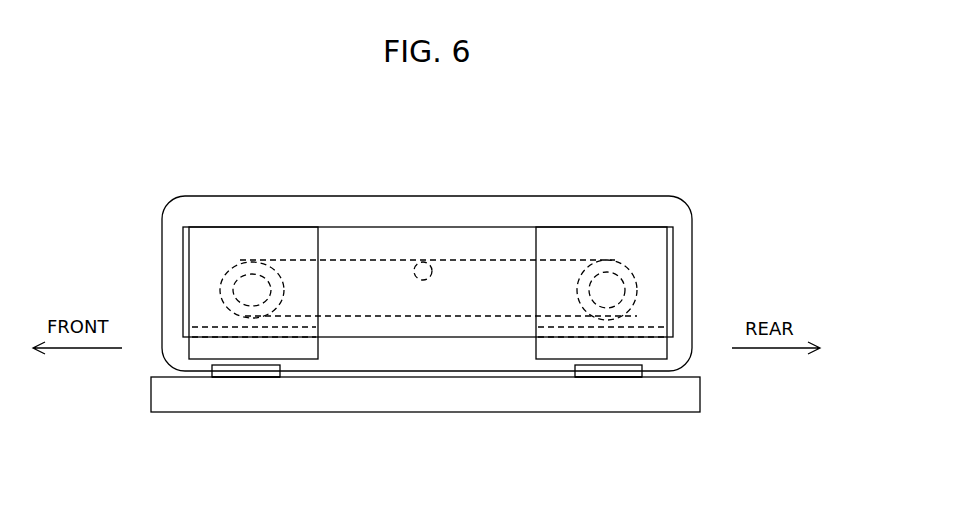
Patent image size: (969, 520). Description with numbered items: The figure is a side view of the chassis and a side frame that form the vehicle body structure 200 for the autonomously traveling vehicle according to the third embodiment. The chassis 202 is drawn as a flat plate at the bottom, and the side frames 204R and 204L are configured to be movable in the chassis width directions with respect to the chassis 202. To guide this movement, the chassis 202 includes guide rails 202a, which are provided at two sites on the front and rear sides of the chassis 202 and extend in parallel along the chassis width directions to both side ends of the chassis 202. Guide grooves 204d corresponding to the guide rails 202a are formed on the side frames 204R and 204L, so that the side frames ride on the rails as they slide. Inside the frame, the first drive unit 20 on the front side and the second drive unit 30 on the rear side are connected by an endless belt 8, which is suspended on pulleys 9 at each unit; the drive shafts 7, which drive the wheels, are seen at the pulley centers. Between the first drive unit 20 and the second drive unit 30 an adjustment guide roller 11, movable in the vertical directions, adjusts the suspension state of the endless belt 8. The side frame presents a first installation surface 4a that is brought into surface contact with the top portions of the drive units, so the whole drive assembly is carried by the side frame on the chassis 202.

The vehicle body structure 200 is at (723, 220).
The first drive unit 20 is at (208, 230).
The second drive unit 30 is at (642, 245).
The first installation surface 4a is at (337, 240).
The side frame 204L is at (550, 207).
The side frame 204R is at (601, 293).
The endless belt 8 is at (483, 257).
The pulley 9 is at (247, 262).
The drive shaft 7 is at (240, 290).
The adjustment guide roller 11 is at (421, 262).
The guide groove 204d is at (255, 367).
The chassis 202 is at (418, 398).
The guide rail 202a is at (238, 372).